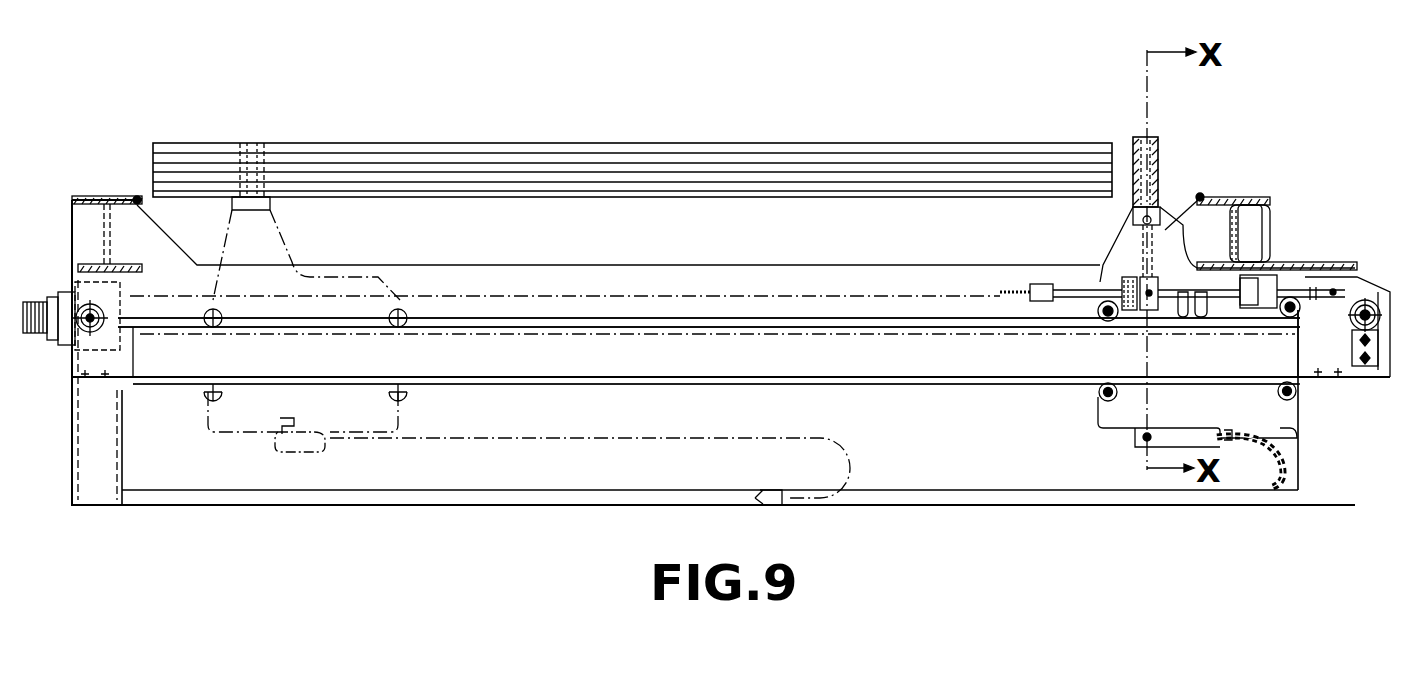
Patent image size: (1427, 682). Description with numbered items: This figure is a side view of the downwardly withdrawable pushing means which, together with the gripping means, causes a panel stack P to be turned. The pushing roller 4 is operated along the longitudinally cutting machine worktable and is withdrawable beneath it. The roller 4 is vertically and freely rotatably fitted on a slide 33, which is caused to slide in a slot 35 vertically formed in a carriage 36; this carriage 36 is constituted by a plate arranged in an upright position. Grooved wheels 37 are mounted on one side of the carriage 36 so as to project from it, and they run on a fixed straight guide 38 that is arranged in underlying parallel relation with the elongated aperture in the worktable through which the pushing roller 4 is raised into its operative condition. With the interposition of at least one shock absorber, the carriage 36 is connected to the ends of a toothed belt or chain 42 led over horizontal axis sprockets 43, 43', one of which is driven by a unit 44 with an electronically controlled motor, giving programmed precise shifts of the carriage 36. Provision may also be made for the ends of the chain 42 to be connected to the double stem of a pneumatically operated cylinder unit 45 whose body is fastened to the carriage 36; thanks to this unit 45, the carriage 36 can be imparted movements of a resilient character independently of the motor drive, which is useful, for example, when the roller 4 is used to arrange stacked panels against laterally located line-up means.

The stack of plates P is at (965, 140).
The pushing roller 4 is at (260, 142).
The slide 33 is at (1167, 228).
The slot 35 is at (1140, 232).
The carriage 36 is at (1128, 420).
The grooved wheels 37 is at (1100, 303).
The fixed straight guide 38 is at (942, 386).
The toothed belt or chain 42 is at (845, 294).
The sprocket 43 is at (1382, 291).
The sprocket 43' is at (72, 293).
The unit with electronically controlled motor 44 is at (60, 340).
The pneumatically operated cylinder unit 45 is at (1228, 288).